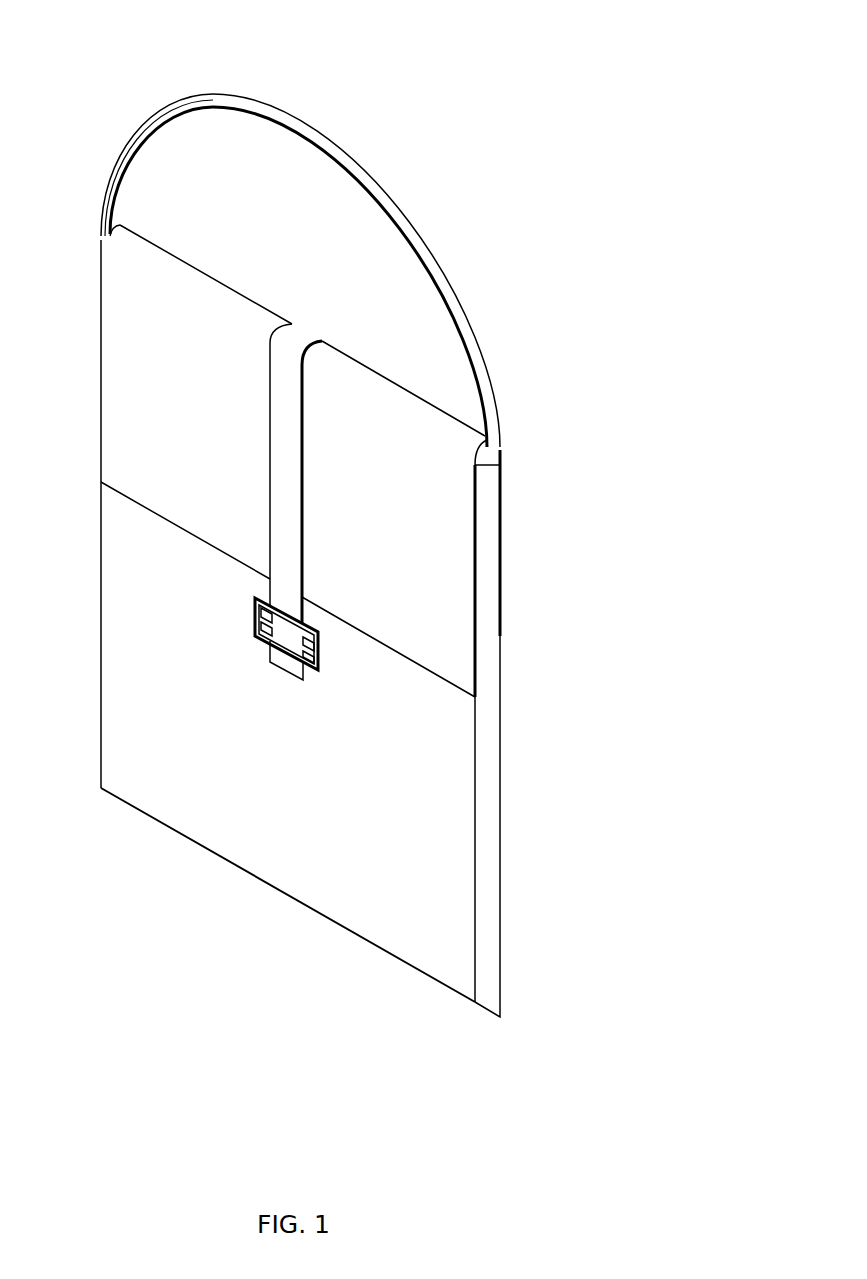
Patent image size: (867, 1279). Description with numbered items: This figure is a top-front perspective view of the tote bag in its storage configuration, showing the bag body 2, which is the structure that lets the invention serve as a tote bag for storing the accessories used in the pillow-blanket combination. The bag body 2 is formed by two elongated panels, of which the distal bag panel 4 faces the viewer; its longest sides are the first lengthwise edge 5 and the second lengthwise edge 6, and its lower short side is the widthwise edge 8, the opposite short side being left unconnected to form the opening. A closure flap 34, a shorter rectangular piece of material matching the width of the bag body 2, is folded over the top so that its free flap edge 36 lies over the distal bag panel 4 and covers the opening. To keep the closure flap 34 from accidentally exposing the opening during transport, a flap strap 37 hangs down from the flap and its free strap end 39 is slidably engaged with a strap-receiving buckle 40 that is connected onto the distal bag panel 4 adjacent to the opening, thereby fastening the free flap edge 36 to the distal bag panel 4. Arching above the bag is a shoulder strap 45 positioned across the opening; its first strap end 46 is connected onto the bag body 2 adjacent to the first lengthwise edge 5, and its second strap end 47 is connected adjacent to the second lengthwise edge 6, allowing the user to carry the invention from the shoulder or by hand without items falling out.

The bag body 2 is at (625, 914).
The distal bag panel 4 is at (108, 711).
The first lengthwise edge 5 is at (99, 578).
The second lengthwise edge 6 is at (503, 846).
The widthwise edge 8 is at (302, 906).
The closure flap 34 is at (113, 381).
The free flap edge 36 is at (152, 508).
The flap strap 37 is at (287, 443).
The free strap end 39 is at (306, 681).
The strap-receiving buckle 40 is at (320, 664).
The shoulder strap 45 is at (393, 207).
The first strap end 46 is at (98, 240).
The second strap end 47 is at (503, 464).